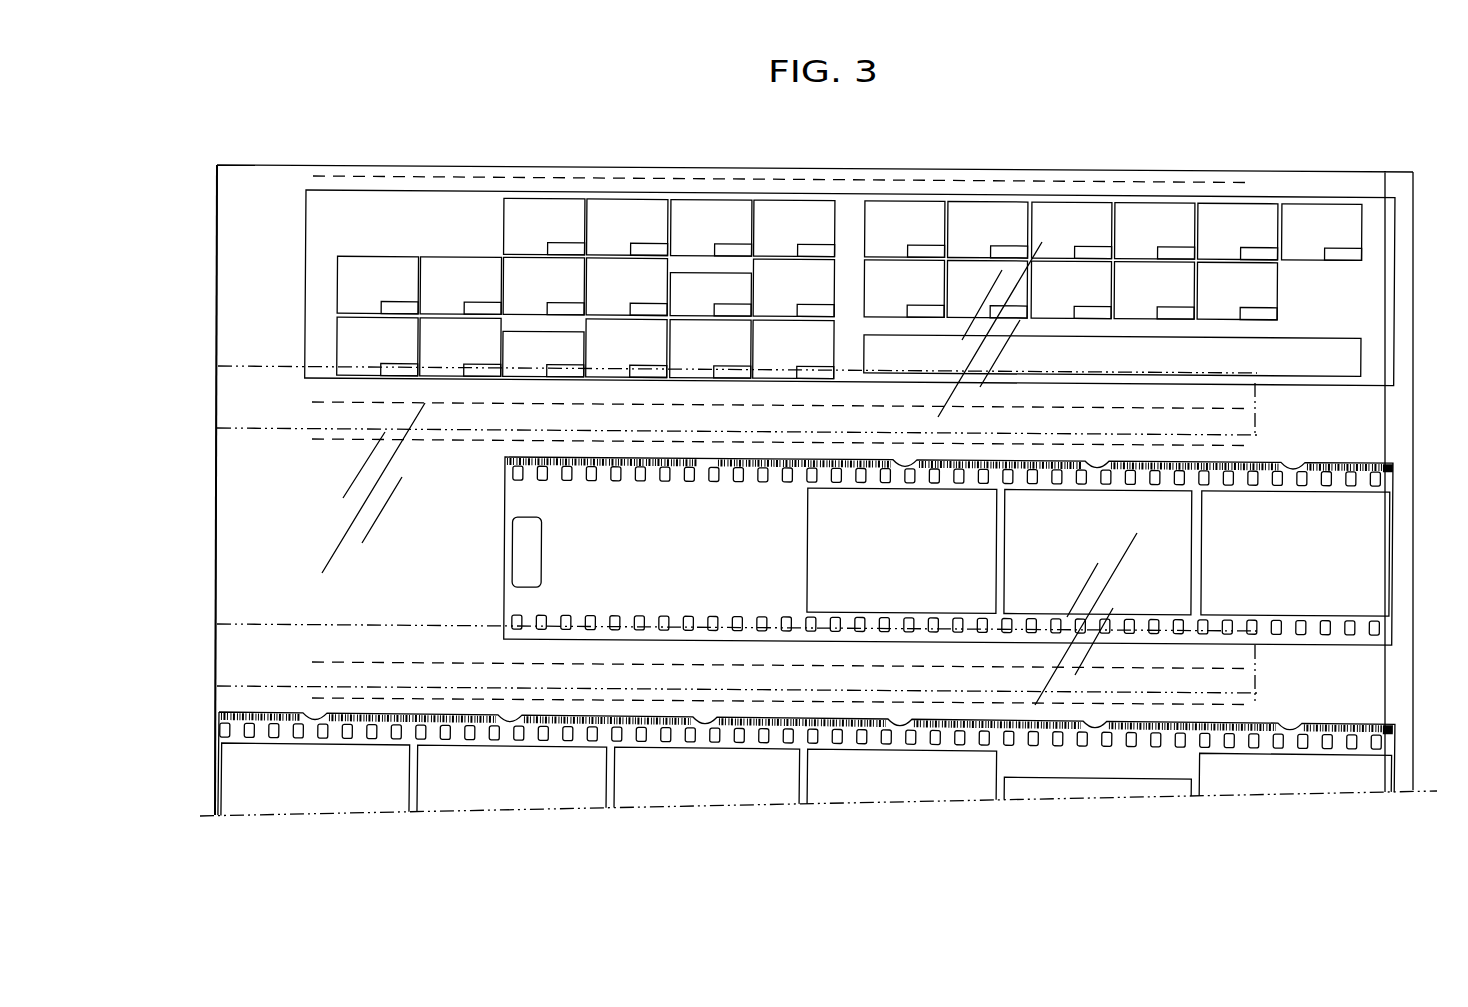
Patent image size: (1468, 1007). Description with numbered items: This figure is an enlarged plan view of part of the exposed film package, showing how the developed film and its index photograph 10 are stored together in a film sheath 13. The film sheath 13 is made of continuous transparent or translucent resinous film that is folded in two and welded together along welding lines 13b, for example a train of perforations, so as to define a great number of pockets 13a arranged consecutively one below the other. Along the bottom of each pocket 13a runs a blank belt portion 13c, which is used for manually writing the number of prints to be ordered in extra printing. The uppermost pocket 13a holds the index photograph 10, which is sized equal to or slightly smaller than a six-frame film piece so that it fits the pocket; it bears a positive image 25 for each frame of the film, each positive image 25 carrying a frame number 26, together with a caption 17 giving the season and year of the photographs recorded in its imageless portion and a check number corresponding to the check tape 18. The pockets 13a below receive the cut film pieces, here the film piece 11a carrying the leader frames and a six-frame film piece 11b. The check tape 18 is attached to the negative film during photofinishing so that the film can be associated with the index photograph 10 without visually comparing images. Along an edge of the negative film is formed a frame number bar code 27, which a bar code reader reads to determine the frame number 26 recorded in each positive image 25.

The index photograph 10 is at (1390, 250).
The film piece 11a is at (943, 517).
The film piece 11b is at (1392, 787).
The film sheath 13 is at (850, 247).
The pocket 13a is at (228, 288).
The welding line 13b is at (575, 176).
The blank belt portion 13c is at (238, 402).
The caption 17 is at (372, 228).
The check tape 18 is at (517, 565).
The positive image 25 is at (617, 203).
The frame number 26 is at (650, 243).
The frame number bar code 27 is at (1358, 462).